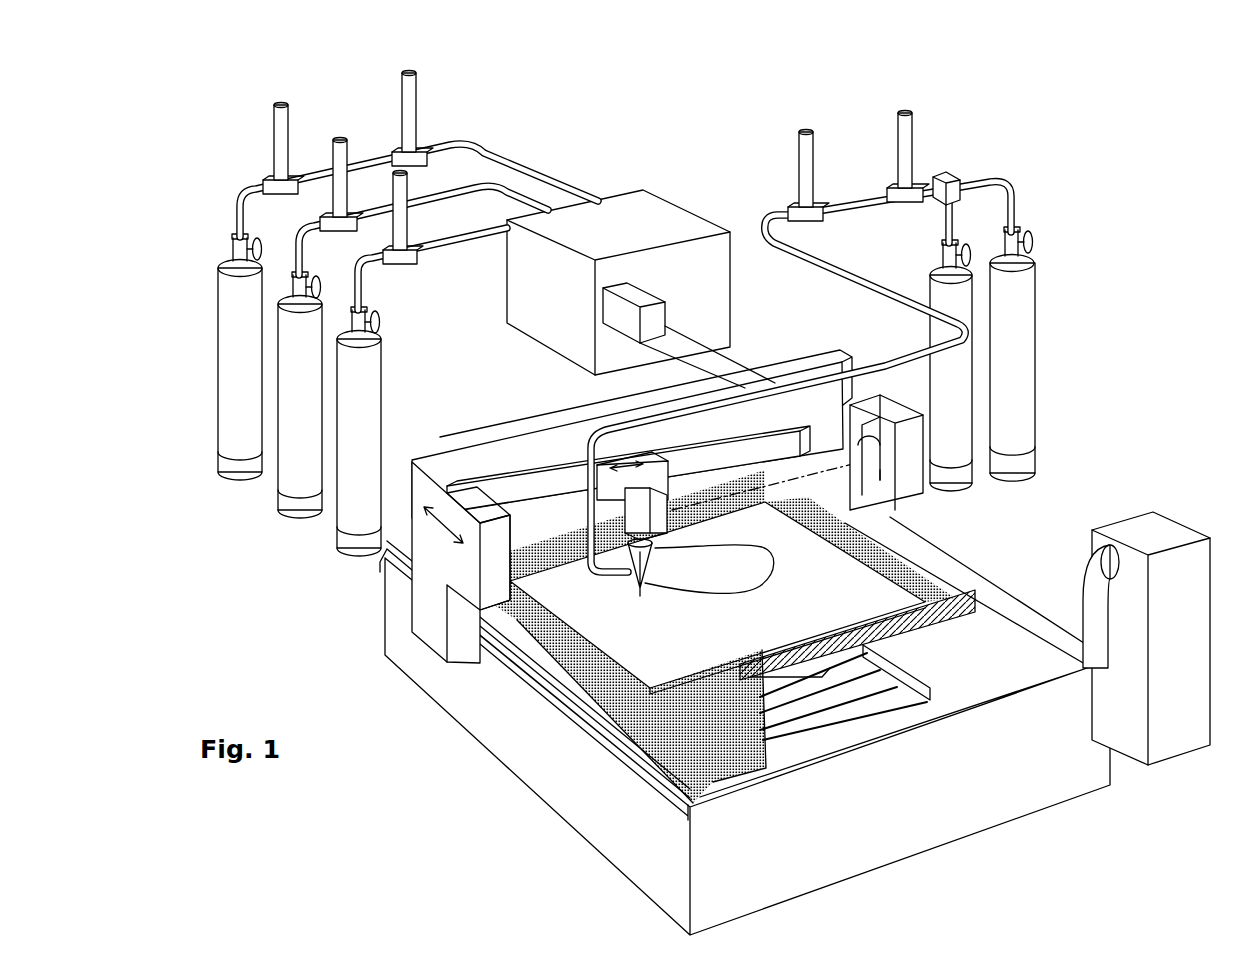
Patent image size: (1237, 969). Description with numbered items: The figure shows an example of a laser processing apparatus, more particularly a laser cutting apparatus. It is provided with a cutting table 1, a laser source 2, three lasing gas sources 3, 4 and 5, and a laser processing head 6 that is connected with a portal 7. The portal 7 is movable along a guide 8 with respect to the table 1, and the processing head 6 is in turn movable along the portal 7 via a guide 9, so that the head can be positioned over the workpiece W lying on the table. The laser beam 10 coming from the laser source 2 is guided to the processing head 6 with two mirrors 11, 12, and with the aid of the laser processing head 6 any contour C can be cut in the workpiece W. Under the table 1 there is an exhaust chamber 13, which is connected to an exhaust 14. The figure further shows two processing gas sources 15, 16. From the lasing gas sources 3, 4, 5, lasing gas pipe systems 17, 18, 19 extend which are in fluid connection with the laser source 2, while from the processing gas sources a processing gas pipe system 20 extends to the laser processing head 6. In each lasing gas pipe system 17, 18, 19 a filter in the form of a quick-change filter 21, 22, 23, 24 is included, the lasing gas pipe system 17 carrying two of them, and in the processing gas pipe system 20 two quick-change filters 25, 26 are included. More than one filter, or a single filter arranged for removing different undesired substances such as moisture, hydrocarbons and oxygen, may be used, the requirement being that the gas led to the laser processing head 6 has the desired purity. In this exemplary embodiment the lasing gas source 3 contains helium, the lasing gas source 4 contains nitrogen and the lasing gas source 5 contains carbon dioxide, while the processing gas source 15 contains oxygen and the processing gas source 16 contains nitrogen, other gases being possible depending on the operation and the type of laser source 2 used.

The cutting table 1 is at (640, 695).
The laser source 2 is at (658, 220).
The lasing gas source 3 is at (232, 466).
The lasing gas source 4 is at (292, 502).
The lasing gas source 5 is at (352, 538).
The laser processing head 6 is at (655, 563).
The portal 7 is at (488, 458).
The guide 8 is at (543, 697).
The guide 9 is at (547, 502).
The laser beam 10 is at (863, 474).
The mirror 11 is at (887, 461).
The mirror 12 is at (638, 510).
The exhaust chamber 13 is at (868, 690).
The exhaust 14 is at (1157, 537).
The processing gas source 15 is at (957, 470).
The processing gas source 16 is at (1019, 457).
The lasing gas pipe system 17 is at (493, 157).
The lasing gas pipe system 18 is at (538, 197).
The lasing gas pipe system 19 is at (443, 243).
The processing gas pipe system 20 is at (849, 270).
The quick-change filter 21 is at (279, 103).
The quick-change filter 22 is at (409, 73).
The quick-change filter 23 is at (338, 140).
The quick-change filter 24 is at (408, 183).
The quick-change filter 25 is at (904, 112).
The quick-change filter 26 is at (805, 128).
The workpiece W is at (676, 651).
The contour C is at (786, 573).